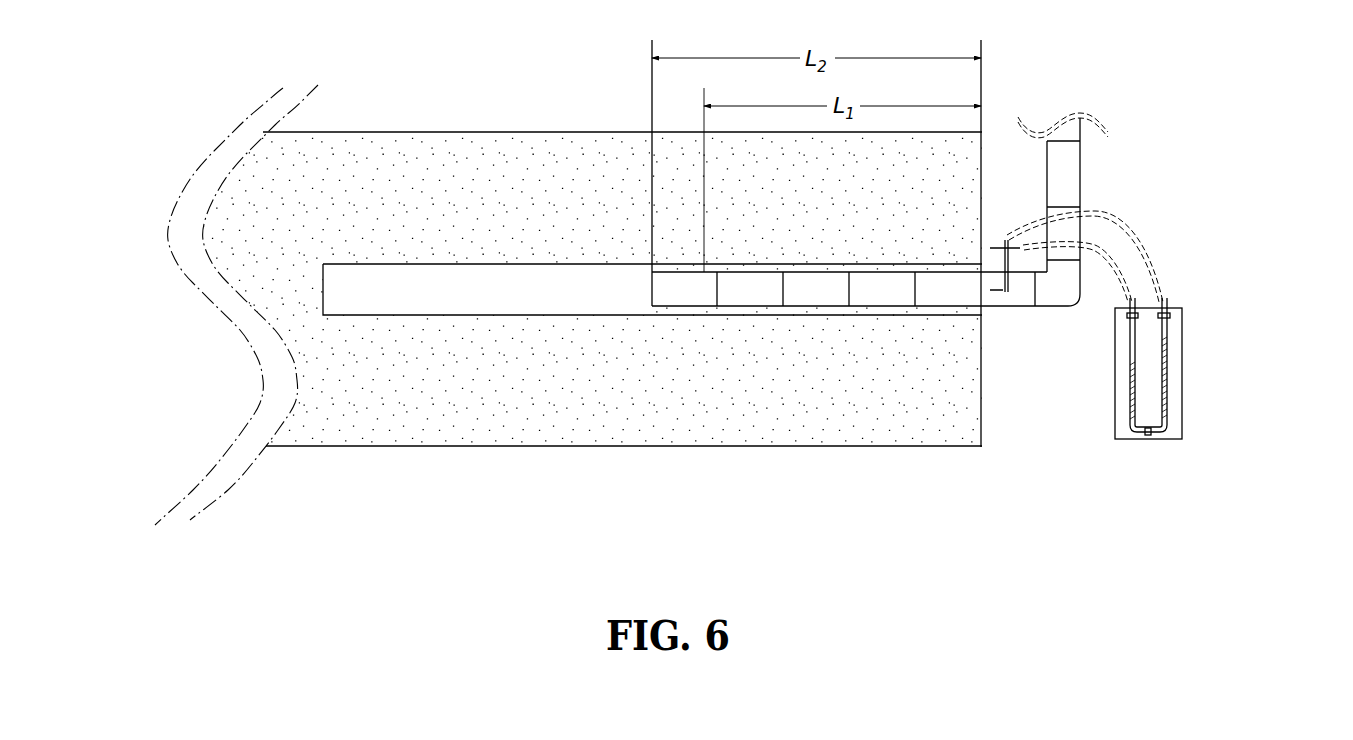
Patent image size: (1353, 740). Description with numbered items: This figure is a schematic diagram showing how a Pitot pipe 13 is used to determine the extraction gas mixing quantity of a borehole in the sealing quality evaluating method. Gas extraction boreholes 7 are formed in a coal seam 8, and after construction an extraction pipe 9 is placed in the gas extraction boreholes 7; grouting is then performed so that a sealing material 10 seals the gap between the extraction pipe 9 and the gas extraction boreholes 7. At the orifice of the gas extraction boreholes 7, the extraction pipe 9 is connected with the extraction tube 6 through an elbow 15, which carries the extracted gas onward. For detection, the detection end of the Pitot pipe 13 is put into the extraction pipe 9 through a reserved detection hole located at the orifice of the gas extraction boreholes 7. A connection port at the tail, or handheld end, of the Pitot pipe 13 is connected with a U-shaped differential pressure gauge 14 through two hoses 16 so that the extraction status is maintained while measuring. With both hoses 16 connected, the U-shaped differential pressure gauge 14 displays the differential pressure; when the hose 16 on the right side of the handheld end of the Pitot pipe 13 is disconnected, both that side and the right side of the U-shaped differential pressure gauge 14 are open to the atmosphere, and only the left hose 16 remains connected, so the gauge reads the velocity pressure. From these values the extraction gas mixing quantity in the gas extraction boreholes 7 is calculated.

The extraction tube 6 is at (1067, 192).
The gas extraction boreholes 7 is at (403, 273).
The coal seam 8 is at (357, 170).
The extraction pipe 9 is at (693, 288).
The sealing material 10 is at (823, 307).
The Pitot pipe 13 is at (1008, 293).
The U-shaped differential pressure gauge 14 is at (1172, 380).
The elbow 15 is at (1072, 273).
The hoses 16 is at (1121, 268).